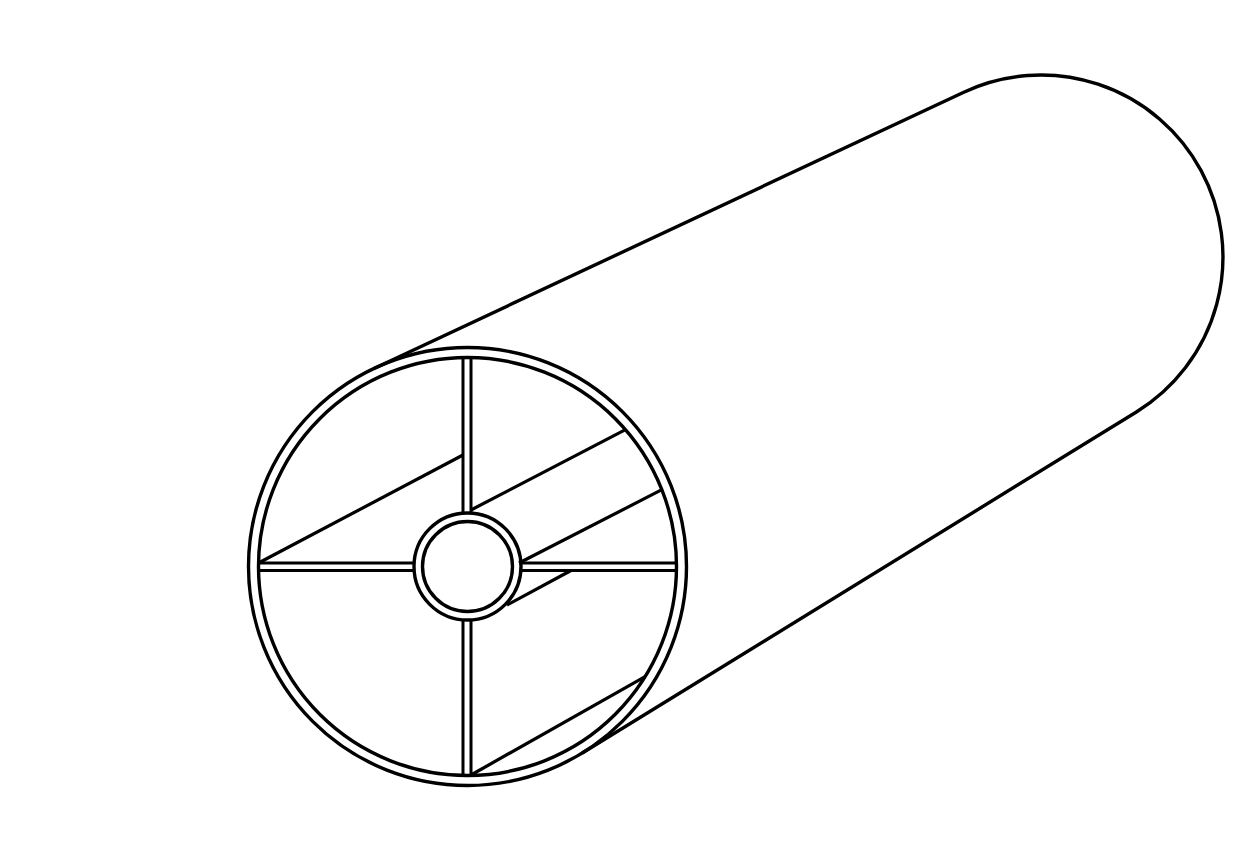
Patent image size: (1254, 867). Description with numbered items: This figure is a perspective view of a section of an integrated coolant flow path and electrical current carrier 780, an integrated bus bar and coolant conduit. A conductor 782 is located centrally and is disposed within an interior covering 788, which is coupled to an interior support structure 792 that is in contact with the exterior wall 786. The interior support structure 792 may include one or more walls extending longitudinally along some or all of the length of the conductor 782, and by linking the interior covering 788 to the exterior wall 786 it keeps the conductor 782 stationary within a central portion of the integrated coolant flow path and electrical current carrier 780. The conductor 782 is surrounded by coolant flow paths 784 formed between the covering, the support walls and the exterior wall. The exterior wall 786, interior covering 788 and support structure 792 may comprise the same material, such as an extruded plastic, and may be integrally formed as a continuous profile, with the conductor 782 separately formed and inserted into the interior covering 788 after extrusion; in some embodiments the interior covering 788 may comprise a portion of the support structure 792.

The integrated coolant flow path and electrical current carrier 780 is at (388, 150).
The conductor 782 is at (448, 580).
The coolant flow paths 784 is at (348, 469).
The exterior wall 786 is at (680, 224).
The interior covering 788 is at (603, 470).
The interior support structure 792 is at (392, 566).